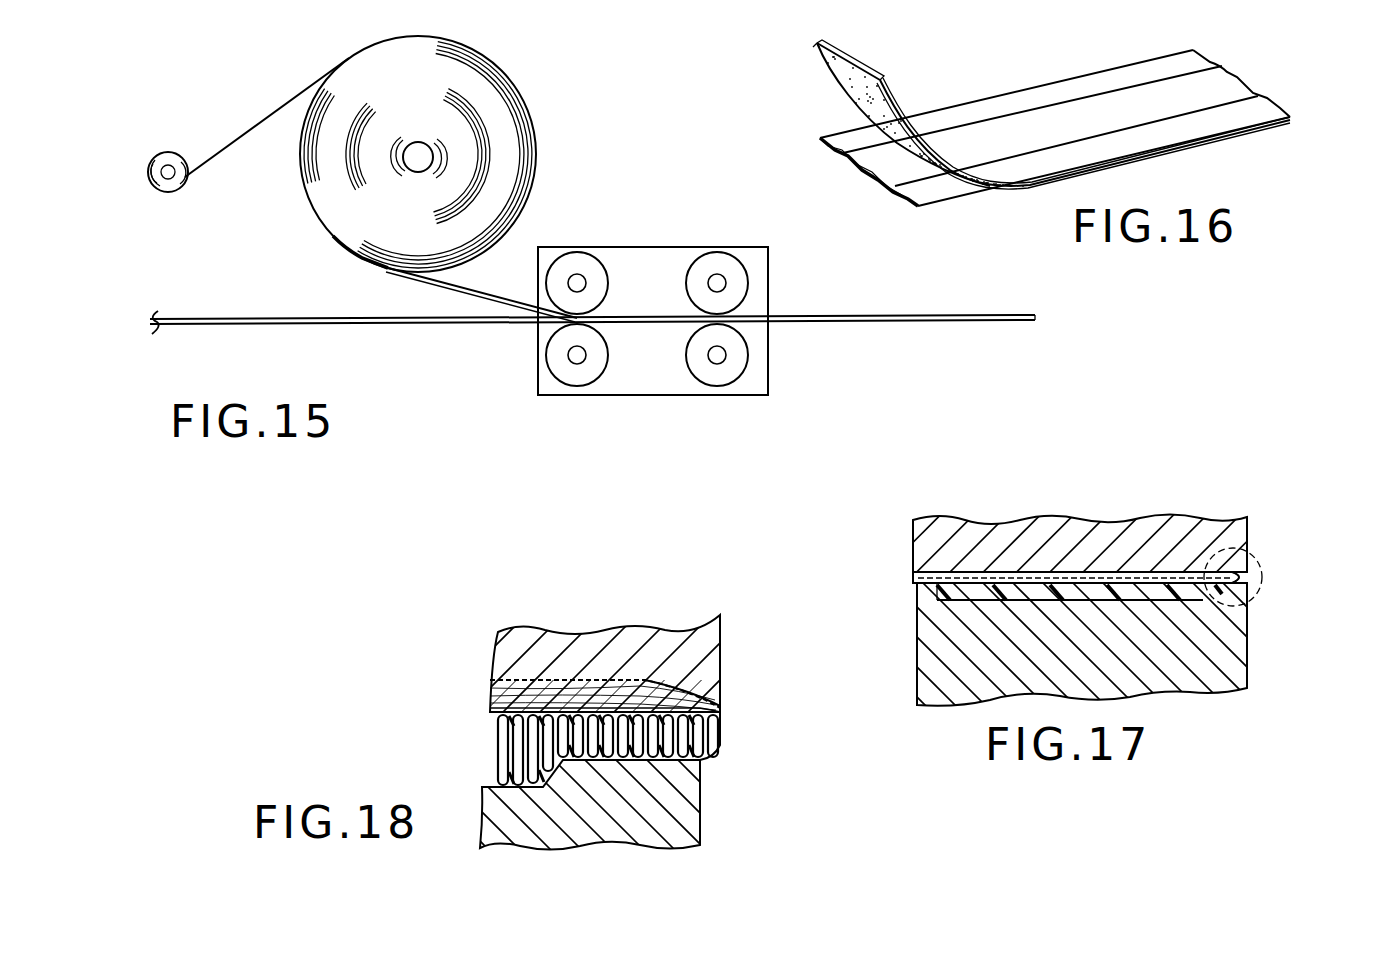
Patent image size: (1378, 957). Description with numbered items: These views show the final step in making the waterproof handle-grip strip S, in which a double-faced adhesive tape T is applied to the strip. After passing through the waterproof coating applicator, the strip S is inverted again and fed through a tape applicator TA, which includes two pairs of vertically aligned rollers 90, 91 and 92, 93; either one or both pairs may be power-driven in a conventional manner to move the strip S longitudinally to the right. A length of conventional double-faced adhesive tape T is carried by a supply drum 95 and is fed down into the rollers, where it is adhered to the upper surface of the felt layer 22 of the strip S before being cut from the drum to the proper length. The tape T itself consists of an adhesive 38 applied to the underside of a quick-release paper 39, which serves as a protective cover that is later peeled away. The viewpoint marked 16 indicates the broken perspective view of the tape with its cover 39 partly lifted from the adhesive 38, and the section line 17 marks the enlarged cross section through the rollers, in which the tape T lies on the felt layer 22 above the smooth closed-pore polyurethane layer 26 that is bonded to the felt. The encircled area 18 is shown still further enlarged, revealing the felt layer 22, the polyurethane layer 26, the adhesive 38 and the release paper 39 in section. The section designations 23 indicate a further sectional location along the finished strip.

In FIG. 15, the supply drum 95 is at (355, 66).
In FIG. 15, the double-faced adhesive tape T is at (470, 288).
In FIG. 16, the double-faced adhesive tape T is at (1016, 115).
In FIG. 15, the tape applicator TA is at (620, 246).
In FIG. 15, the viewpoint designation for FIG. 16 is at (486, 308).
In FIG. 15, the section line 17— 17 is at (670, 272).
In FIG. 15, the section line 23 is at (917, 268).
In FIG. 15, the roller 90 is at (578, 262).
In FIG. 15, the roller 91 is at (569, 378).
In FIG. 15, the roller 92 is at (718, 262).
In FIG. 17, the roller 92 is at (1158, 525).
In FIG. 18, the roller 92 is at (637, 636).
In FIG. 15, the roller 93 is at (727, 377).
In FIG. 17, the roller 93 is at (1193, 680).
In FIG. 18, the roller 93 is at (686, 802).
In FIG. 16, the adhesive material 38 is at (830, 70).
In FIG. 18, the adhesive material 38 is at (720, 713).
In FIG. 16, the quick-release cover 39 is at (1138, 97).
In FIG. 17, the quick-release cover 39 is at (1238, 553).
In FIG. 18, the quick-release cover 39 is at (720, 682).
In FIG. 16, the strip S is at (818, 141).
In FIG. 17, the felt layer 22 is at (945, 577).
In FIG. 18, the felt layer 22 is at (490, 700).
In FIG. 17, the polyurethane layer 26 is at (960, 594).
In FIG. 18, the polyurethane layer 26 is at (490, 769).
In FIG. 17, the encircled area designation for FIG. 18 is at (1262, 607).